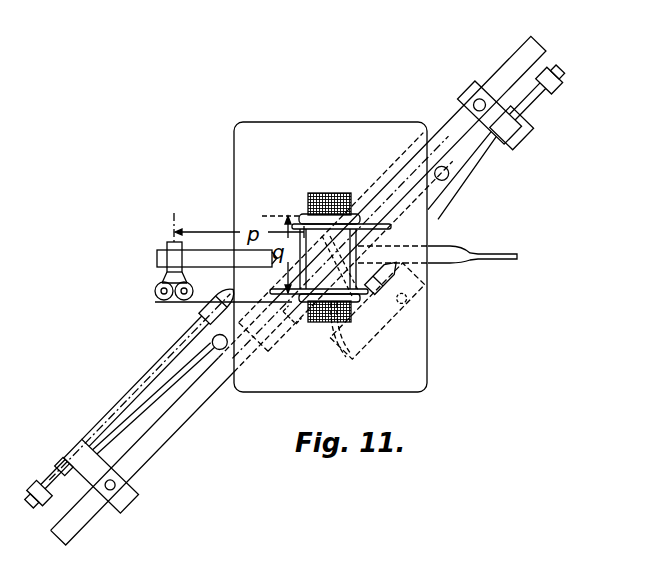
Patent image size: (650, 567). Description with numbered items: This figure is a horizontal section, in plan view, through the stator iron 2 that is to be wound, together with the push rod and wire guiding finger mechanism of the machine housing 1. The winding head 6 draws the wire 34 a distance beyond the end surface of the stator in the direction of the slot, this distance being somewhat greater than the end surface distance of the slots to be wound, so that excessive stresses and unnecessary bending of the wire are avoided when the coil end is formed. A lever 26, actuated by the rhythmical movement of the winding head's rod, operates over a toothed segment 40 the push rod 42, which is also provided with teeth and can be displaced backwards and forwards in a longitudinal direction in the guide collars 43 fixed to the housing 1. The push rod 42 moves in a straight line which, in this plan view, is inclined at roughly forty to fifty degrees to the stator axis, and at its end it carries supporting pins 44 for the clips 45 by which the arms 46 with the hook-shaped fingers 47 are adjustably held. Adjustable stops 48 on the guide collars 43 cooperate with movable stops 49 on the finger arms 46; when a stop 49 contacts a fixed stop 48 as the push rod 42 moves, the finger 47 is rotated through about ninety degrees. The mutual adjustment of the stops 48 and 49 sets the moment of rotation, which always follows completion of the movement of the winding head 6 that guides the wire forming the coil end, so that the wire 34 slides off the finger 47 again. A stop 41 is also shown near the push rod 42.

The machine housing 1 is at (343, 128).
The stator iron 2 is at (336, 196).
The winding head 6 is at (173, 255).
The lever 26 is at (507, 246).
The wire 34 is at (253, 301).
The toothed segment 40 is at (383, 328).
The stop 41 is at (290, 318).
The push rod 42 is at (165, 438).
The guide collars 43 is at (220, 365).
The supporting pins 44 is at (112, 490).
The clips 45 is at (120, 490).
The arms 46 is at (140, 388).
The hook-shaped finger 47 is at (386, 287).
The adjustable stops 48 is at (177, 372).
The movable stops 49 is at (47, 492).